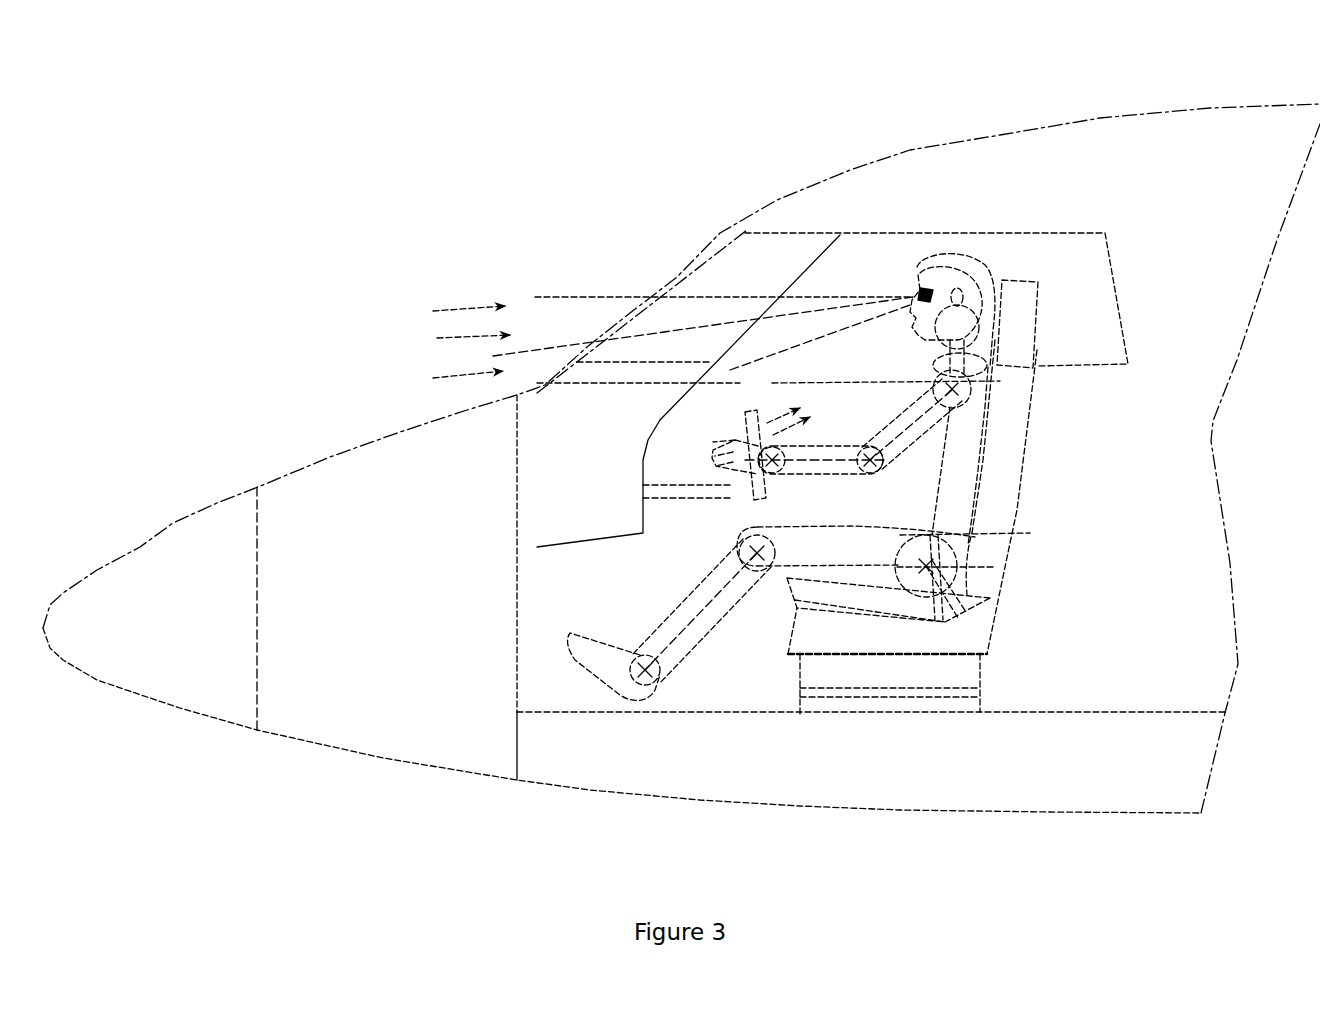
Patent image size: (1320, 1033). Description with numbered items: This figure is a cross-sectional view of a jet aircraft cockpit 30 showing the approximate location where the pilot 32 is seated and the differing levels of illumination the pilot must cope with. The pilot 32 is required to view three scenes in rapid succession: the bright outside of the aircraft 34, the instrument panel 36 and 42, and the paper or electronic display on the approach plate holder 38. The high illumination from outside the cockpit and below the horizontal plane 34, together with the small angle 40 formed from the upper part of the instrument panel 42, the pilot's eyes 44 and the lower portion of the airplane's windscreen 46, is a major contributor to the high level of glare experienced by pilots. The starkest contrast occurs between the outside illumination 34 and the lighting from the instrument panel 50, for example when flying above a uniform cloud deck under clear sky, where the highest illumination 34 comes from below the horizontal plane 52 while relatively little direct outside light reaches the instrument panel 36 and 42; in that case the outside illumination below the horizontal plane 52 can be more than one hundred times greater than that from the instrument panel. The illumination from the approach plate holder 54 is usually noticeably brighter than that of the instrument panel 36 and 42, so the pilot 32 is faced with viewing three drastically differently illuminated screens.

The jet aircraft cockpit 30 is at (1058, 118).
The pilot 32 is at (973, 250).
The outside illumination 34 is at (433, 310).
The instrument panel 36 is at (661, 432).
The approach plate holder 38 is at (774, 488).
The small angle 40 is at (773, 322).
The upper part of the instrument panel 42 is at (687, 377).
The pilot's eyes 44 is at (913, 288).
The lower portion of the windscreen 46 is at (620, 335).
The instrument panel lighting 50 is at (700, 392).
The horizontal plane 52 is at (570, 292).
The approach plate holder illumination 54 is at (805, 416).